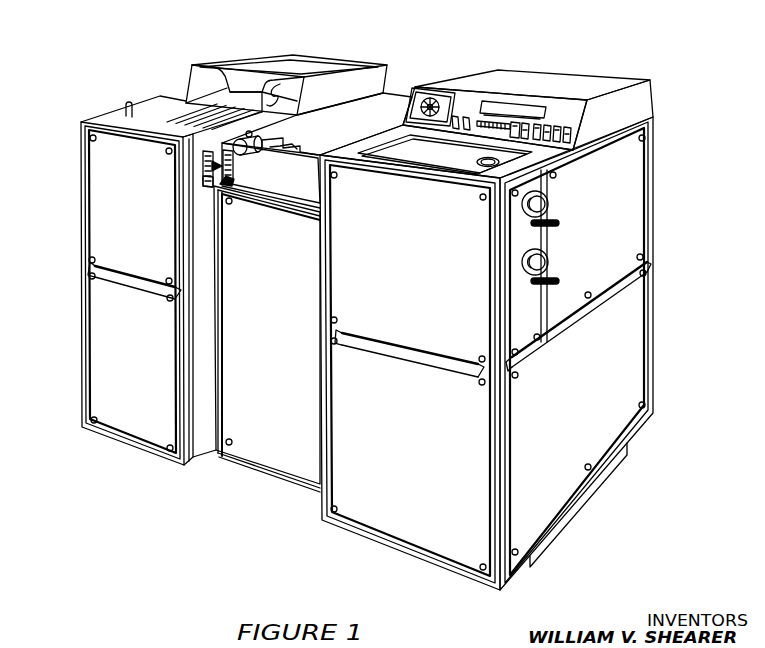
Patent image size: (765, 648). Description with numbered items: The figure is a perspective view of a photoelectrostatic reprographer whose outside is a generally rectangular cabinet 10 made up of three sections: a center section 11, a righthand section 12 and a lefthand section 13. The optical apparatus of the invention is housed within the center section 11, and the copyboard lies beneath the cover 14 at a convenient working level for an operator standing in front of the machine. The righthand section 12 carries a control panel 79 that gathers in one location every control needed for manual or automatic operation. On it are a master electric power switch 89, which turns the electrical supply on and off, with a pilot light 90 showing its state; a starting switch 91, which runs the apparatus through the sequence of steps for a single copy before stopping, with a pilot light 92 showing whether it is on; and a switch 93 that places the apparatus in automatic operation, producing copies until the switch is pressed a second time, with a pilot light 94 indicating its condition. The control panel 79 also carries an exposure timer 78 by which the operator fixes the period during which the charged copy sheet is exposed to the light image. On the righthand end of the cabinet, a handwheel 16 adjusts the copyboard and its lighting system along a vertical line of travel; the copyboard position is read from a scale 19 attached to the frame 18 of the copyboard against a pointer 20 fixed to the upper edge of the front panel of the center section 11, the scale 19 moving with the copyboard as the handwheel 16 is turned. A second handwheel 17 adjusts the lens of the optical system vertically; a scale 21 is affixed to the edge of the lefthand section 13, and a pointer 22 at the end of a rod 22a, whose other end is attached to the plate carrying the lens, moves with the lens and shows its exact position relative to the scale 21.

The cabinet 10 is at (379, 320).
The center section 11 is at (290, 450).
The righthand section 12 is at (425, 528).
The lefthand section 13 is at (135, 422).
The cover 14 is at (393, 118).
The handwheel 16 is at (549, 203).
The handwheel 17 is at (549, 259).
The frame 18 is at (305, 185).
The scale 19 is at (234, 165).
The pointer 20 is at (226, 183).
The scale 21 is at (203, 183).
The pointer 22 is at (212, 166).
The rod 22a is at (221, 172).
The exposure timer 78 is at (443, 100).
The control panel 79 is at (562, 109).
The master electric power switch 89 is at (561, 125).
The pilot light 90 is at (568, 138).
The starting switch 91 is at (547, 127).
The pilot light 92 is at (548, 116).
The switch 93 is at (512, 126).
The pilot light 94 is at (526, 127).